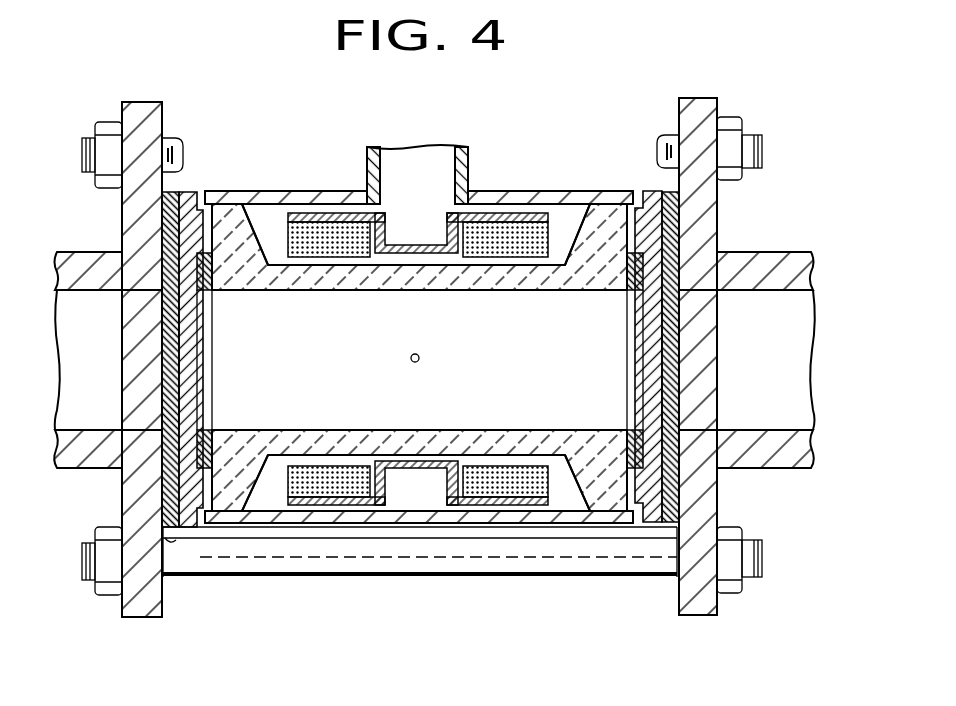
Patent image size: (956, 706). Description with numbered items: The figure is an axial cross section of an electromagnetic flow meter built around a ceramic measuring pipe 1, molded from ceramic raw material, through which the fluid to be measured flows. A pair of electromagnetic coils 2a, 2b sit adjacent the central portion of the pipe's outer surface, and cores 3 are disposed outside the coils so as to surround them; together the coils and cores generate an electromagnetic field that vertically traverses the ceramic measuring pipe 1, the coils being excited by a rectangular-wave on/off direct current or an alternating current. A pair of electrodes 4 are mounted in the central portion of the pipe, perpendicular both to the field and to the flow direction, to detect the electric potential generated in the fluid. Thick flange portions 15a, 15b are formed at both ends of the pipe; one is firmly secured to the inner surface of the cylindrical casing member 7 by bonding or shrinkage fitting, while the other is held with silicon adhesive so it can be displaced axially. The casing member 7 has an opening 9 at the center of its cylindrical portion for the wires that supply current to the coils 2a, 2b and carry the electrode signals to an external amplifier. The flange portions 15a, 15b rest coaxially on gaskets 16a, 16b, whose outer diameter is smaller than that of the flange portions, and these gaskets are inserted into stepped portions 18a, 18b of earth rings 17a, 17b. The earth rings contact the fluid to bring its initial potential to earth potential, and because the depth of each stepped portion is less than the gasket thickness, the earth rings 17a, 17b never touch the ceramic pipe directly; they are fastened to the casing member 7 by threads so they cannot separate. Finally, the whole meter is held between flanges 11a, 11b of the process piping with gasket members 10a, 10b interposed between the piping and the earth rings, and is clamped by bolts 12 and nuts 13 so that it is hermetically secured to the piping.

The ceramic measuring pipe 1 is at (355, 279).
The electromagnetic coil 2a is at (322, 232).
The electromagnetic coil 2b is at (333, 492).
The core 3 is at (420, 245).
The electrode 4 is at (420, 358).
The casing member 7 is at (538, 190).
The opening 9 is at (392, 160).
The gasket member 10a is at (190, 577).
The gasket member 10b is at (670, 528).
The flange 11a is at (140, 100).
The flange 11b is at (696, 98).
The bolt 12 is at (475, 577).
The nut 13 is at (110, 596).
The flange portion 15a is at (240, 226).
The flange portion 15b is at (598, 226).
The gasket 16a is at (203, 293).
The gasket 16b is at (632, 295).
The earth ring 17a is at (190, 190).
The earth ring 17b is at (650, 190).
The stepped portion 18a is at (203, 427).
The stepped portion 18b is at (632, 425).